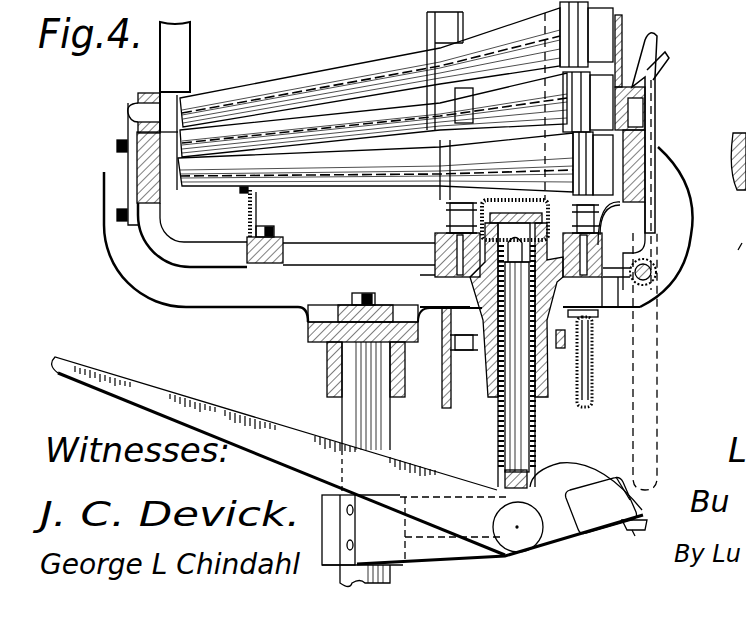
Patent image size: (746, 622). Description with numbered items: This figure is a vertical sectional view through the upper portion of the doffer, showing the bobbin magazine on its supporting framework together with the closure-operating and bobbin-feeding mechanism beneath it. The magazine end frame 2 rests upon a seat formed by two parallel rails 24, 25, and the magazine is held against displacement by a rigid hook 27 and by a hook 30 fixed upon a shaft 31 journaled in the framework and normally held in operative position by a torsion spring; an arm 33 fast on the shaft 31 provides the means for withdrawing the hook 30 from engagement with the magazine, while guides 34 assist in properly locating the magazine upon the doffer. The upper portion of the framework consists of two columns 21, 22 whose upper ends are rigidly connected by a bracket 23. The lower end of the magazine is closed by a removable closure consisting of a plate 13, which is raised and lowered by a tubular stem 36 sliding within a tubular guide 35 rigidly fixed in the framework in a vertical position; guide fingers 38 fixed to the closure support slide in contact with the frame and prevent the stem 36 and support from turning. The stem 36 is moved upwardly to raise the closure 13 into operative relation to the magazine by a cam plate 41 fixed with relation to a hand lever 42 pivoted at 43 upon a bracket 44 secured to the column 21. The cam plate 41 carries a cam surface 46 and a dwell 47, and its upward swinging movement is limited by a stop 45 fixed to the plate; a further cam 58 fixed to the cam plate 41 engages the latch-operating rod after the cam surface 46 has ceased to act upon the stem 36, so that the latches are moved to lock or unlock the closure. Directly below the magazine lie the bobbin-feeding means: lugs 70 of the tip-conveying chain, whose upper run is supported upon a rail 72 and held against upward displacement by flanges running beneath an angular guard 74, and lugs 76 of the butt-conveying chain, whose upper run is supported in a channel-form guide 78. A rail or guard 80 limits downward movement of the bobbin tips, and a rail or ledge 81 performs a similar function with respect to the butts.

The end frame 2 is at (146, 94).
The plate 13 is at (478, 186).
The column 21 is at (384, 441).
The column 22 is at (352, 100).
The bracket 23 is at (332, 352).
The rail 24 is at (645, 130).
The rail 25 is at (148, 157).
The rigid hook 27 is at (136, 114).
The hook 30 is at (656, 43).
The shaft 31 is at (660, 282).
The arm 33 is at (650, 394).
The guides 34 is at (670, 58).
The tubular guide 35 is at (490, 372).
The tubular stem 36 is at (538, 440).
The guide fingers 38 is at (558, 348).
The cam plate 41 is at (560, 532).
The hand lever 42 is at (146, 395).
The pivot 43 is at (517, 530).
The bracket 44 is at (445, 548).
The stop 45 is at (635, 536).
The cam surface 46 is at (582, 465).
The dwell 47 is at (642, 507).
The cam 58 is at (628, 482).
The lugs 70 is at (443, 385).
The rail 72 is at (437, 263).
The angular guard 74 is at (448, 236).
The lugs 76 is at (593, 382).
The channel-form guide 78 is at (618, 285).
The rail or guard 80 is at (250, 196).
The rail or ledge 81 is at (615, 195).